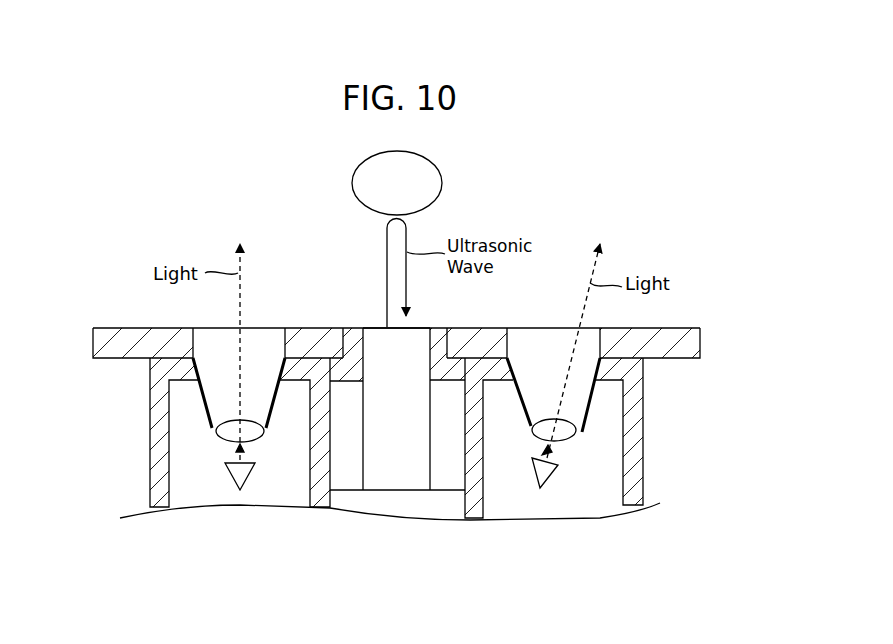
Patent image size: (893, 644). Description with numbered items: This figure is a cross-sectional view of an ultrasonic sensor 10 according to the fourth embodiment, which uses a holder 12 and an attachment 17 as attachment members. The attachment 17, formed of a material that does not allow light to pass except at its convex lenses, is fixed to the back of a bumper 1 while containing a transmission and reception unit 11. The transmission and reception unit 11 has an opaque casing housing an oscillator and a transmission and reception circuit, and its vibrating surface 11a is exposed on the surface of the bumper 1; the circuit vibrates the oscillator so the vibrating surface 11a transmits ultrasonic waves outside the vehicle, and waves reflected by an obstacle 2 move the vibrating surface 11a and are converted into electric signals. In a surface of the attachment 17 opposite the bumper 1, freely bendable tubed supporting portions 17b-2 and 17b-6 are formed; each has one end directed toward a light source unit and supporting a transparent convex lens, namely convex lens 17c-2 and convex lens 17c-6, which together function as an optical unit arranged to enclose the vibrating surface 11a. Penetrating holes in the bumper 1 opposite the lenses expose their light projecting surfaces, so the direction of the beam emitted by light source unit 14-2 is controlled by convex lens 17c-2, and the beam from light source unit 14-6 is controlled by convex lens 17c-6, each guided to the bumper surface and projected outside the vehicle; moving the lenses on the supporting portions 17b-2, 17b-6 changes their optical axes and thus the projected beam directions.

The bumper 1 is at (131, 327).
The obstacle 2 is at (443, 183).
The ultrasonic sensor 10 is at (110, 485).
The transmission and reception unit 11 is at (372, 470).
The vibrating surface 11a is at (380, 327).
The holder 12 is at (441, 382).
The light source unit 14-2 is at (247, 478).
The light source unit 14-6 is at (557, 473).
The attachment 17 is at (150, 403).
The supporting portion 17b-2 is at (203, 413).
The supporting portion 17b-6 is at (597, 397).
The convex lens 17c-2 is at (231, 437).
The convex lens 17c-6 is at (563, 441).